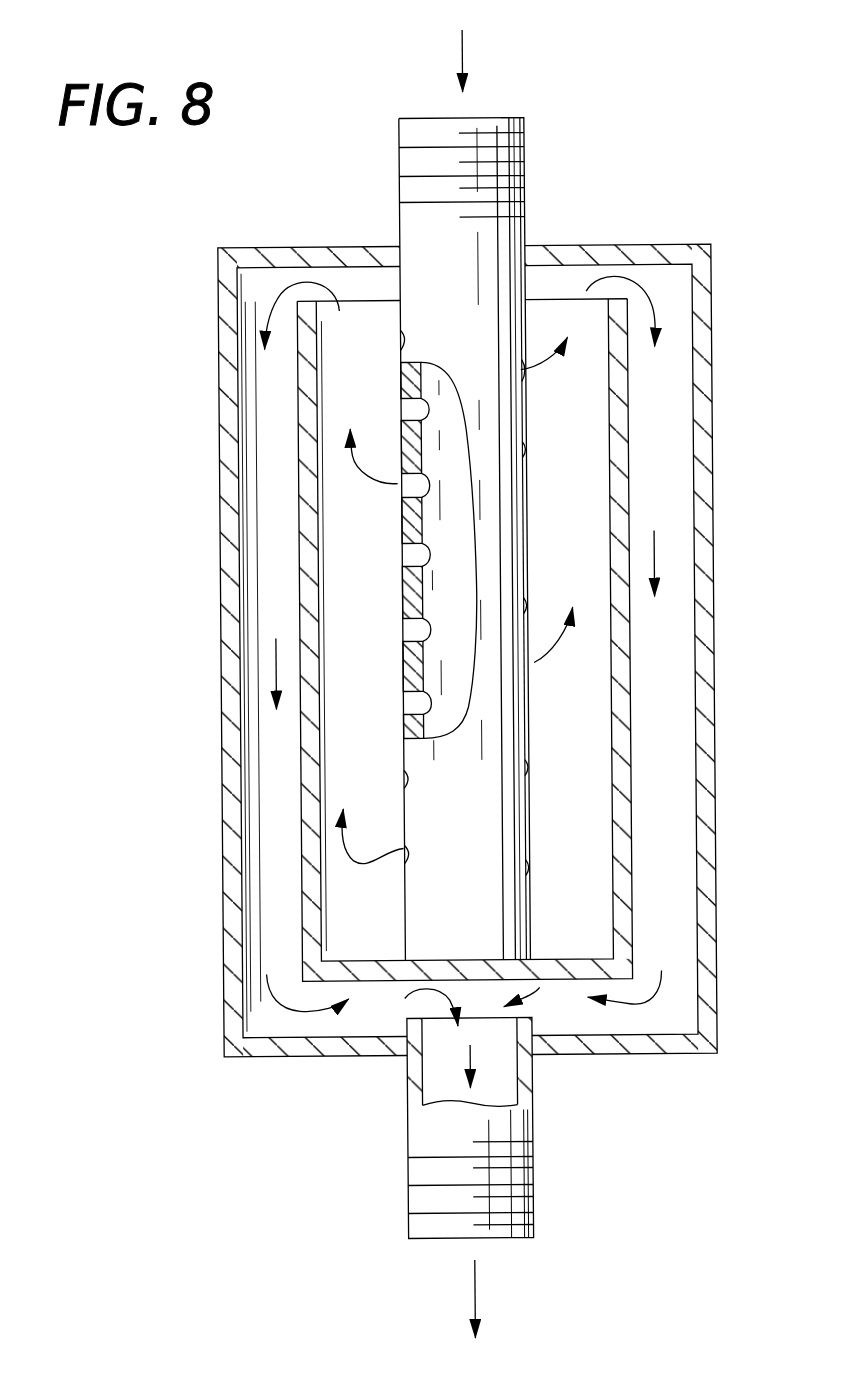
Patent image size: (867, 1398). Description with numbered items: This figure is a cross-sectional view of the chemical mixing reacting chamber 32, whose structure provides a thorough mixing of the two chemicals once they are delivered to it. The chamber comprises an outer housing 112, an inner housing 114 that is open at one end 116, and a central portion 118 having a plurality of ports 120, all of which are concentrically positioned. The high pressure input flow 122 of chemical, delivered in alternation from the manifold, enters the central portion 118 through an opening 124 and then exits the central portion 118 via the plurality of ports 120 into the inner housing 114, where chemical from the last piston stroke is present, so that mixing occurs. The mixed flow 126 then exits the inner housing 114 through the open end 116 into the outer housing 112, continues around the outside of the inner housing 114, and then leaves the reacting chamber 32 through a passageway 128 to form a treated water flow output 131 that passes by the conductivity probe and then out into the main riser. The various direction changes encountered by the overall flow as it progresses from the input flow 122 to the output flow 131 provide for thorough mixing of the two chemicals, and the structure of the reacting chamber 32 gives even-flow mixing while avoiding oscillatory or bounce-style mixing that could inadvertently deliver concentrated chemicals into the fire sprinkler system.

The chemical mixing reacting chamber 32 is at (188, 532).
The outer housing 112 is at (710, 767).
The inner housing 114 is at (625, 824).
The open end 116 is at (347, 300).
The central portion 118 is at (528, 237).
The ports 120 is at (524, 587).
The high pressure input flow 122 is at (467, 57).
The opening 124 is at (524, 116).
The mixed flow 126 is at (267, 313).
The passageway 128 is at (497, 1073).
The treated water flow output 131 is at (470, 1283).